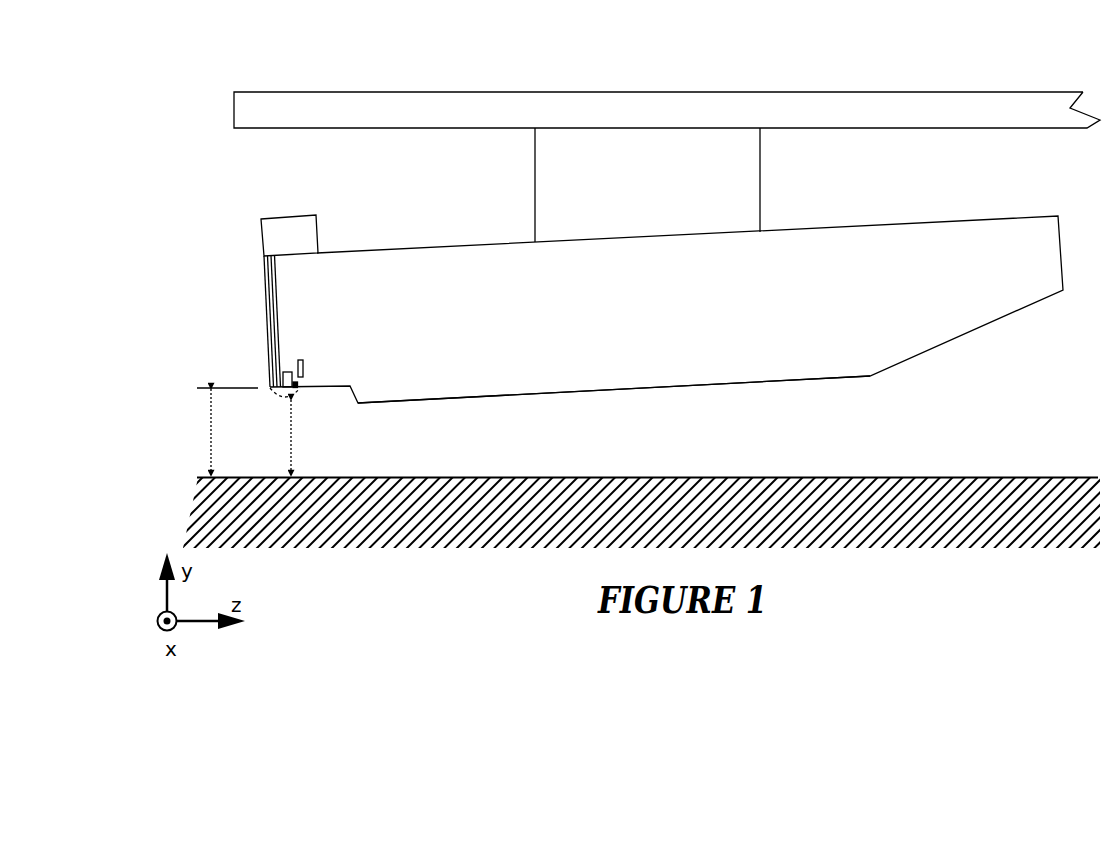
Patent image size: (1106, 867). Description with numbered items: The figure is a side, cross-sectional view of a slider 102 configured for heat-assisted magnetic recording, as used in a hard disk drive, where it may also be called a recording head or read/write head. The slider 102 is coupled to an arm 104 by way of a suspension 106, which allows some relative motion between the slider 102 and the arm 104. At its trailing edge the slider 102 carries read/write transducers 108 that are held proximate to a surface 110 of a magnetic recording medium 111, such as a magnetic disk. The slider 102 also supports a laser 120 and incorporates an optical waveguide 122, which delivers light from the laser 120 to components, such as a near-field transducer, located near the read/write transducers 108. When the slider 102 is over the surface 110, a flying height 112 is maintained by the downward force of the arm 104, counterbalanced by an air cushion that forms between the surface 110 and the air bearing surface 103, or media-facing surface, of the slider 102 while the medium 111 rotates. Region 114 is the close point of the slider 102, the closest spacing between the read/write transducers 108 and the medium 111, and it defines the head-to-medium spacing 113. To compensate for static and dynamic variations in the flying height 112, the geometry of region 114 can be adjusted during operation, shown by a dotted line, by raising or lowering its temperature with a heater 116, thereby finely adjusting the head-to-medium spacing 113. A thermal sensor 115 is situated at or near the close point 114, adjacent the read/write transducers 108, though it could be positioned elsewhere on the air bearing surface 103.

The slider 102 is at (927, 230).
The air bearing surface 103 is at (480, 398).
The arm 104 is at (992, 100).
The suspension 106 is at (759, 176).
The read/write transducers 108 is at (284, 372).
The surface 110 is at (930, 477).
The magnetic recording medium 111 is at (948, 535).
The flying height 112 is at (209, 432).
The head-to-medium spacing 113 is at (267, 438).
The close point region 114 is at (299, 394).
The thermal sensor 115 is at (298, 384).
The heater 116 is at (299, 360).
The laser 120 is at (290, 229).
The optical waveguide 122 is at (270, 300).